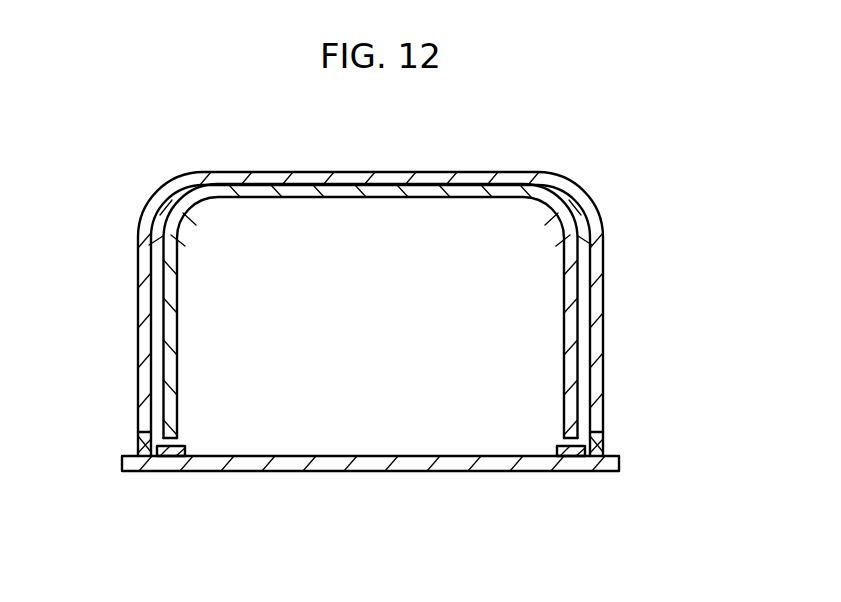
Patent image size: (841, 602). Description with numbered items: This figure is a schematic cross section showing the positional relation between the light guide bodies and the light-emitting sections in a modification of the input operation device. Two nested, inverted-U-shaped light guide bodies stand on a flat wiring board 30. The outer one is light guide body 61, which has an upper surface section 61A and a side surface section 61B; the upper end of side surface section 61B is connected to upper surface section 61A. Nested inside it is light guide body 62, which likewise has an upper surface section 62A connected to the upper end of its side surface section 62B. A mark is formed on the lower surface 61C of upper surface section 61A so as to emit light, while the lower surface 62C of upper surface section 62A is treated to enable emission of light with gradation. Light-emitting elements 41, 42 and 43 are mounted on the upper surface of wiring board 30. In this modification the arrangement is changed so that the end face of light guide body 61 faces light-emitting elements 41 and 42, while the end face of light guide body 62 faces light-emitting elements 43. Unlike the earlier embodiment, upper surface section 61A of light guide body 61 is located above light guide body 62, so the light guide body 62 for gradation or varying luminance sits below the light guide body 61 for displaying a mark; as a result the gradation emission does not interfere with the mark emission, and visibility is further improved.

The light guide body 61 is at (468, 178).
The upper surface section 61A is at (593, 153).
The side surface section 61B is at (118, 175).
The lower surface 61C is at (273, 184).
The light guide body 62 is at (568, 247).
The upper surface section 62A is at (537, 217).
The side surface section 62B is at (182, 218).
The lower surface 62C is at (333, 197).
The wiring board 30 is at (407, 460).
The light-emitting element 41 is at (600, 457).
The light-emitting element 42 is at (142, 457).
The light-emitting element 43 is at (172, 450).